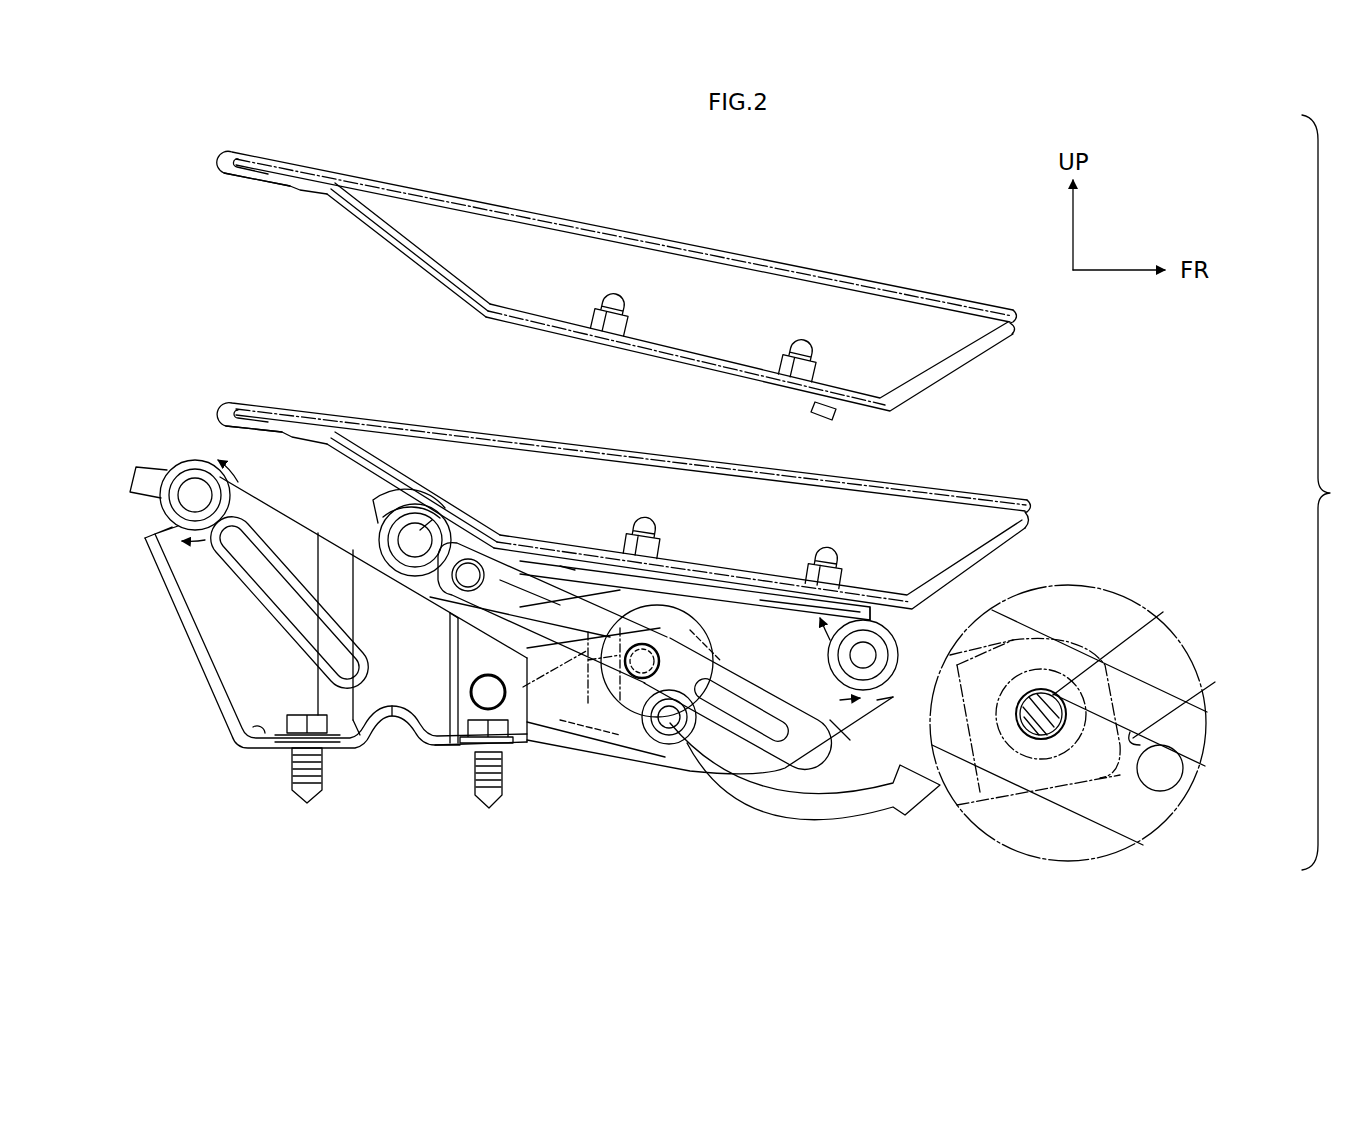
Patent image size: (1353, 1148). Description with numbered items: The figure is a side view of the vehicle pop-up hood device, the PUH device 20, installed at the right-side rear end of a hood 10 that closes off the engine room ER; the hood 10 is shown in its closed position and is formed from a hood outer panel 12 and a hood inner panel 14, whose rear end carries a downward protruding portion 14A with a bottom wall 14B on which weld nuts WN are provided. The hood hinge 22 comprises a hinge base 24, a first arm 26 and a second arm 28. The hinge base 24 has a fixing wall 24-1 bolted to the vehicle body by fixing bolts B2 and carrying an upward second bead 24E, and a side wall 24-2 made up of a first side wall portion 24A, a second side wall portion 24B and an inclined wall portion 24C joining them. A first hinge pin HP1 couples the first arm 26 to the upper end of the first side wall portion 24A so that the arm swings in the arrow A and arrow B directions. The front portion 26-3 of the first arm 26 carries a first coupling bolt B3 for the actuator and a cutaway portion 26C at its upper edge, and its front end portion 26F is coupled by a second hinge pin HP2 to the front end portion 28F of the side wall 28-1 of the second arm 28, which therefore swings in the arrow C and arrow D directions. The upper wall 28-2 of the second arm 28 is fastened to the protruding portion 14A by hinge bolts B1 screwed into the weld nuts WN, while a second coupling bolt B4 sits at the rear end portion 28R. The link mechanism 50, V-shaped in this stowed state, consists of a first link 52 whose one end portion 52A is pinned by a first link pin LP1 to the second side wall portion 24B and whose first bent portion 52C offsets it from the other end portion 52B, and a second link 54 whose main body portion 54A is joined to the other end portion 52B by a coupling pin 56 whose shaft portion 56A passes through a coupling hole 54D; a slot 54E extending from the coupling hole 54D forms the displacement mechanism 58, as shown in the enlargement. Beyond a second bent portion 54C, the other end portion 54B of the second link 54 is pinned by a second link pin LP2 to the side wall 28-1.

The hood 10 is at (303, 158).
The hood outer panel 12 is at (352, 162).
The hood inner panel 14 is at (285, 178).
The protruding portion 14A is at (375, 238).
The bottom wall 14B is at (558, 340).
The weld nut WN is at (595, 305).
The hinge bolt B1 is at (632, 312).
The PUH device 20 is at (132, 384).
The hood hinge 22 is at (183, 410).
The hinge base 24 is at (210, 698).
The fixing wall 24-1 is at (265, 740).
The side wall 24-2 is at (218, 612).
The first side wall portion 24A is at (237, 657).
The second side wall portion 24B is at (445, 735).
The inclined wall portion 24C is at (400, 742).
The second bead 24E is at (397, 715).
The fixing bolt B2 is at (307, 805).
The first arm 26 is at (650, 770).
The cutaway portion 26C is at (570, 611).
The front end portion 26F is at (877, 703).
The front portion 26-3 is at (850, 742).
The second arm 28 is at (835, 402).
The rear end portion 28R is at (425, 507).
The front end portion 28F is at (880, 612).
The side wall 28-1 is at (567, 568).
The upper wall 28-2 is at (838, 615).
The link mechanism 50 is at (582, 738).
The first link 52 is at (553, 738).
The one end portion 52A is at (448, 650).
The other end portion 52B is at (585, 710).
The first bent portion 52C is at (595, 690).
The second link 54 is at (652, 605).
The main body portion 54A is at (700, 652).
The other end portion 54B is at (468, 548).
The second bent portion 54C is at (515, 577).
The coupling hole 54D is at (1042, 740).
The slot 54E is at (767, 790).
The coupling pin 56 is at (660, 650).
The shaft portion 56A is at (598, 672).
The displacement mechanism 58 is at (708, 640).
The first hinge pin HP1 is at (195, 495).
The second hinge pin HP2 is at (870, 660).
The first link pin LP1 is at (492, 712).
The second link pin LP2 is at (475, 568).
The first coupling bolt B3 is at (672, 745).
The second coupling bolt B4 is at (430, 522).
The arrow A direction A is at (237, 470).
The arrow B direction B is at (155, 555).
The arrow C direction C is at (825, 640).
The arrow D direction D is at (840, 700).
The engine room ER is at (975, 585).